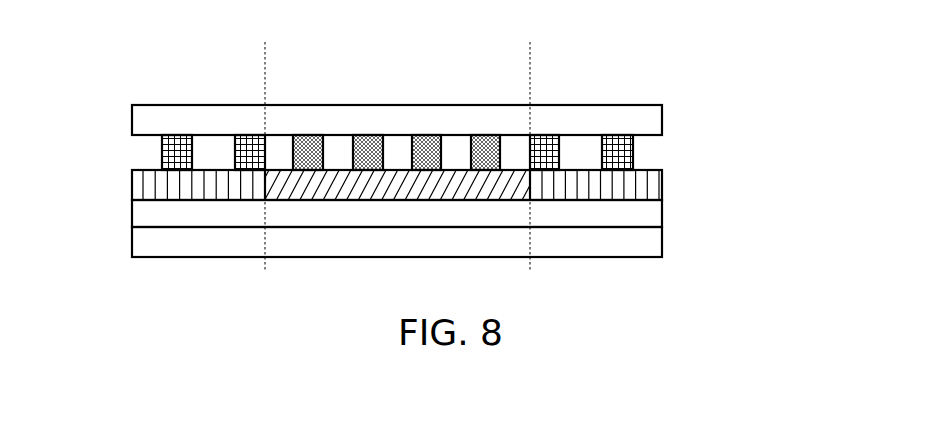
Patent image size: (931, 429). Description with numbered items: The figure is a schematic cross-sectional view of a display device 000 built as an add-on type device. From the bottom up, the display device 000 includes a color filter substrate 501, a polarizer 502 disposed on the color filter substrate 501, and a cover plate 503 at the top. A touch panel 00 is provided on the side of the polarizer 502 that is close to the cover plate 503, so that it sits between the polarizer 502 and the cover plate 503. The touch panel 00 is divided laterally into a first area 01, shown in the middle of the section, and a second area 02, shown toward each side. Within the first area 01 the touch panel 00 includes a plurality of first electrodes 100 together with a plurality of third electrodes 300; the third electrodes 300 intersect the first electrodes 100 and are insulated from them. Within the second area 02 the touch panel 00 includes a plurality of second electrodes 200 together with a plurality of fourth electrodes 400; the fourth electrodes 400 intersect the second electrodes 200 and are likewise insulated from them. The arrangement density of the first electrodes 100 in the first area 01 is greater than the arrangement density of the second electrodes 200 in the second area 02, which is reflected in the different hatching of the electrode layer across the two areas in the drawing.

The display device 000 is at (163, 92).
The first area 01 is at (462, 85).
The second area 02 is at (212, 82).
The touch panel 00 is at (747, 115).
The cover plate 503 is at (618, 120).
The third electrodes 300 is at (607, 133).
The fourth electrodes 400 is at (635, 160).
The first electrodes 100 is at (573, 184).
The second electrodes 200 is at (665, 185).
The polarizer 502 is at (637, 220).
The color filter substrate 501 is at (637, 248).